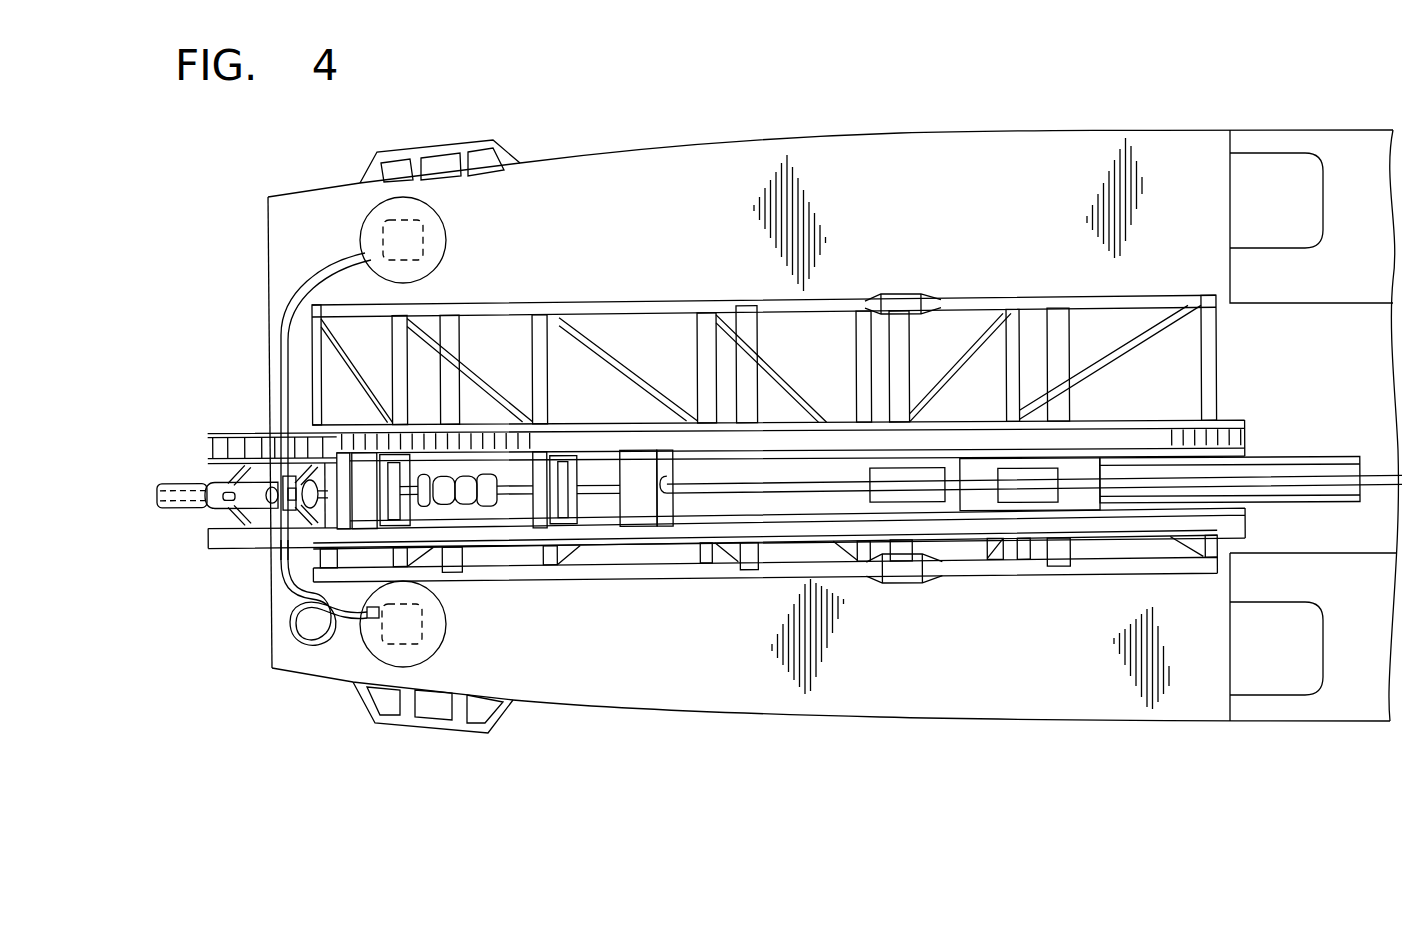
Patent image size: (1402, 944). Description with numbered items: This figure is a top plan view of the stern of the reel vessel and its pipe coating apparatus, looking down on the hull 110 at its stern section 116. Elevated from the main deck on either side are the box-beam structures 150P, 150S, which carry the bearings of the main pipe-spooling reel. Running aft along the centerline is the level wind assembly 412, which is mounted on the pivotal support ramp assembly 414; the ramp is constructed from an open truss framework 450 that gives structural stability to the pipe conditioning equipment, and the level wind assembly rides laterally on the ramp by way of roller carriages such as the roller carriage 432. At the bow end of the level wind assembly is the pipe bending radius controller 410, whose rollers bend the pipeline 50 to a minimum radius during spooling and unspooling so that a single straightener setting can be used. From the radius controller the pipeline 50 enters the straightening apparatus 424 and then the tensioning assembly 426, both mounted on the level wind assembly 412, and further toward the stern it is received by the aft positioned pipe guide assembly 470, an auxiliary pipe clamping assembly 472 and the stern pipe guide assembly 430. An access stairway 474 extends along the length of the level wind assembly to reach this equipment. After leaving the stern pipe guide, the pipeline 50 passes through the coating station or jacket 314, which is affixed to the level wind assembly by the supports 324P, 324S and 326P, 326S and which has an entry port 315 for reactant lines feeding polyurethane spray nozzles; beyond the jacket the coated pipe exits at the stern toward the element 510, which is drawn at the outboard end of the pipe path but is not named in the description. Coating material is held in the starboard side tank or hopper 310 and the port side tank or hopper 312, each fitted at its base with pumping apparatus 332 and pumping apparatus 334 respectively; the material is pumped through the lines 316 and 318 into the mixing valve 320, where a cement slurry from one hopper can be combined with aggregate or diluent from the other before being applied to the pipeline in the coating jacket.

The ship's hull 110 is at (658, 152).
The stern section 116 is at (858, 423).
The port box-beam structure 150P is at (1311, 216).
The starboard box-beam structure 150S is at (1313, 637).
The starboard side tank or hopper 310 is at (418, 657).
The port side tank or hopper 312 is at (450, 235).
The coating station 314 is at (213, 485).
The entry port 315 is at (217, 491).
The line 316 is at (287, 629).
The line 318 is at (318, 270).
The mixing valve 320 is at (268, 434).
The port support 324P is at (311, 426).
The starboard support 324S is at (281, 560).
The port support 326P is at (244, 431).
The starboard support 326S is at (213, 516).
The pumping apparatus 332 is at (372, 648).
The pumping apparatus 334 is at (370, 226).
The pipe bending radius controller 410 is at (1295, 461).
The level wind assembly 412 is at (706, 531).
The support ramp assembly 414 is at (606, 582).
The straightening apparatus 424 is at (1077, 497).
The tensioning assembly 426 is at (937, 512).
The stern pipe guide assembly 430 is at (363, 518).
The roller carriage 432 is at (460, 338).
The open truss framework 450 is at (804, 386).
The aft positioned pipe guide assembly 470 is at (553, 531).
The auxiliary pipe clamping assembly 472 is at (646, 512).
The access stairway 474 is at (487, 443).
The pipeline 50 is at (522, 515).
The plunger tip 510 is at (165, 511).